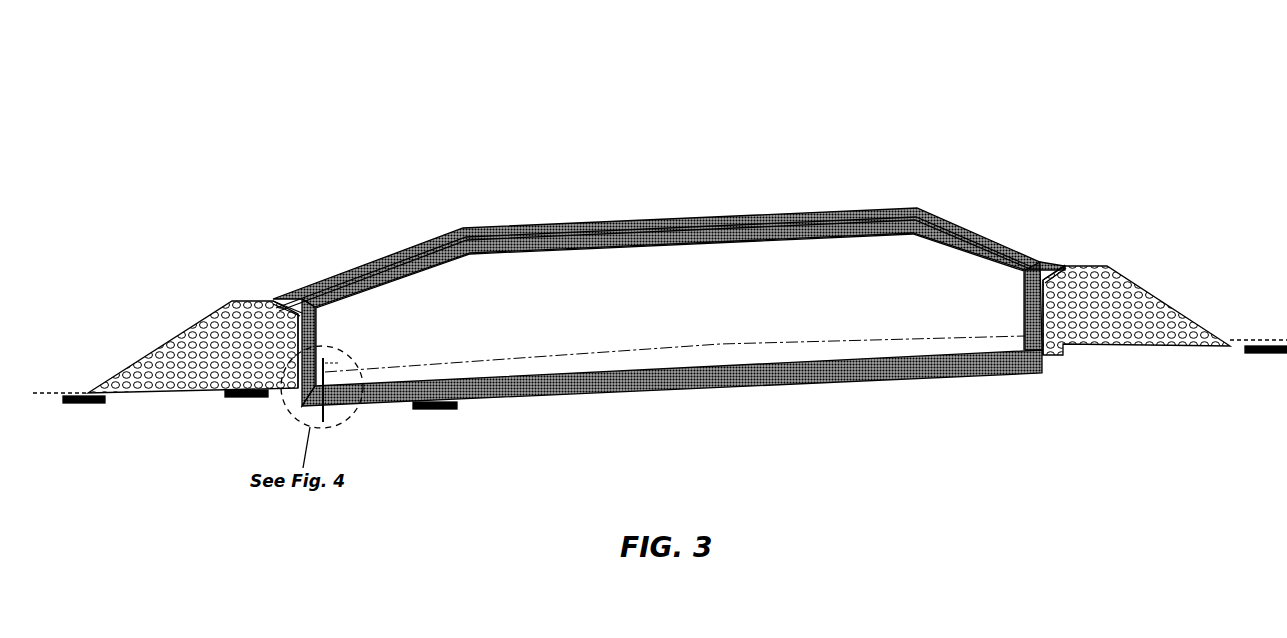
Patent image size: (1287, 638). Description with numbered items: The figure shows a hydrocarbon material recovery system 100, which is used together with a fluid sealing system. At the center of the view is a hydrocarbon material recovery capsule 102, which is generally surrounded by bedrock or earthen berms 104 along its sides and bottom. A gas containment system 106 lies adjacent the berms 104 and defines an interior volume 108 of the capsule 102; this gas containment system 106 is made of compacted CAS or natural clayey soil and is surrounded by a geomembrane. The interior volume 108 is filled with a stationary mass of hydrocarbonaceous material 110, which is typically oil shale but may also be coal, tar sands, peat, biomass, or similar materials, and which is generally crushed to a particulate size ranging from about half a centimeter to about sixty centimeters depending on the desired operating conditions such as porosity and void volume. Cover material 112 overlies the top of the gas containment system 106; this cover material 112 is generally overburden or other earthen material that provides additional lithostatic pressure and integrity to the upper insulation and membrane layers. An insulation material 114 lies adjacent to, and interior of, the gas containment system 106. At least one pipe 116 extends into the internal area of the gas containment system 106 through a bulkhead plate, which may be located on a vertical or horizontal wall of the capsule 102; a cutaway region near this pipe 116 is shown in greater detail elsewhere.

The hydrocarbon material recovery system 100 is at (817, 98).
The hydrocarbon material recovery capsule 102 is at (500, 212).
The earthen berms 104 is at (203, 340).
The gas containment system 106 is at (298, 307).
The interior volume 108 is at (803, 235).
The hydrocarbonaceous material 110 is at (632, 311).
The cover material 112 is at (697, 218).
The insulation material 114 is at (323, 330).
The pipe 116 is at (352, 418).